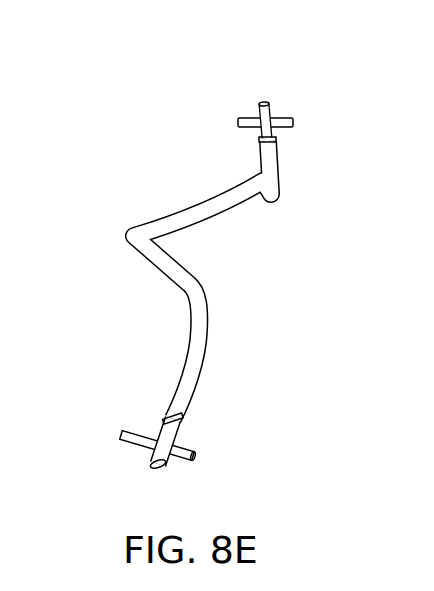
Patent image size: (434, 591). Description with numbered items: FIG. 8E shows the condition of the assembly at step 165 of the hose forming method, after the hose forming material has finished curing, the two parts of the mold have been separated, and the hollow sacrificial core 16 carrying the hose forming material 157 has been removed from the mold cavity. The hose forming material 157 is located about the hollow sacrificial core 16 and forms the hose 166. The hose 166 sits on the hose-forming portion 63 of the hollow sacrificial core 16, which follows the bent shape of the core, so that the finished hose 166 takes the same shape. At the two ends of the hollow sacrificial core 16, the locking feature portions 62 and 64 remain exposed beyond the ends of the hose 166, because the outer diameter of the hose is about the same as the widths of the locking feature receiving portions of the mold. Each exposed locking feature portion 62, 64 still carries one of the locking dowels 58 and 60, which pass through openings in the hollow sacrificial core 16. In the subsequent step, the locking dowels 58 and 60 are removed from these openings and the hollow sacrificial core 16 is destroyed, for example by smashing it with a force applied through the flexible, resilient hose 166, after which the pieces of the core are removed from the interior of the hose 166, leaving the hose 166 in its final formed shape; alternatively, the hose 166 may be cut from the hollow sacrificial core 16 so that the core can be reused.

The hollow sacrificial core 16 is at (221, 251).
The locking dowel 58 is at (238, 122).
The locking dowel 60 is at (196, 455).
The locking feature portion 62 is at (125, 457).
The hose-forming portion 63 is at (118, 212).
The locking feature portion 64 is at (247, 82).
The hose forming material 157 is at (205, 367).
The step 165 is at (319, 152).
The hose 166 is at (223, 211).